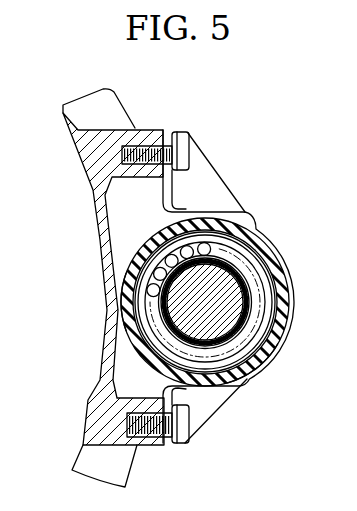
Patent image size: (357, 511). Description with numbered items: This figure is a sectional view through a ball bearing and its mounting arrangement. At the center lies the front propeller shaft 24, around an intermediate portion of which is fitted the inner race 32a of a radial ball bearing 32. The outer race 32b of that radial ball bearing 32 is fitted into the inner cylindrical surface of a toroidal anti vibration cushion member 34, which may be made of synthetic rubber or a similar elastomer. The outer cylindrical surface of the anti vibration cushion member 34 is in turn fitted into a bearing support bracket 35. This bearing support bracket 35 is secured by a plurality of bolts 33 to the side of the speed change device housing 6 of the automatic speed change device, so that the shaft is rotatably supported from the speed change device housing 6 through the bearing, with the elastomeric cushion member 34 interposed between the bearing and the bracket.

The speed change device housing 6 is at (83, 121).
The front propeller shaft 24 is at (232, 264).
The radial ball bearing 32 is at (286, 312).
The inner race 32a is at (262, 370).
The outer race 32b is at (127, 323).
The bolts 33 is at (189, 135).
The anti vibration cushion member 34 is at (232, 329).
The bearing support bracket 35 is at (244, 213).